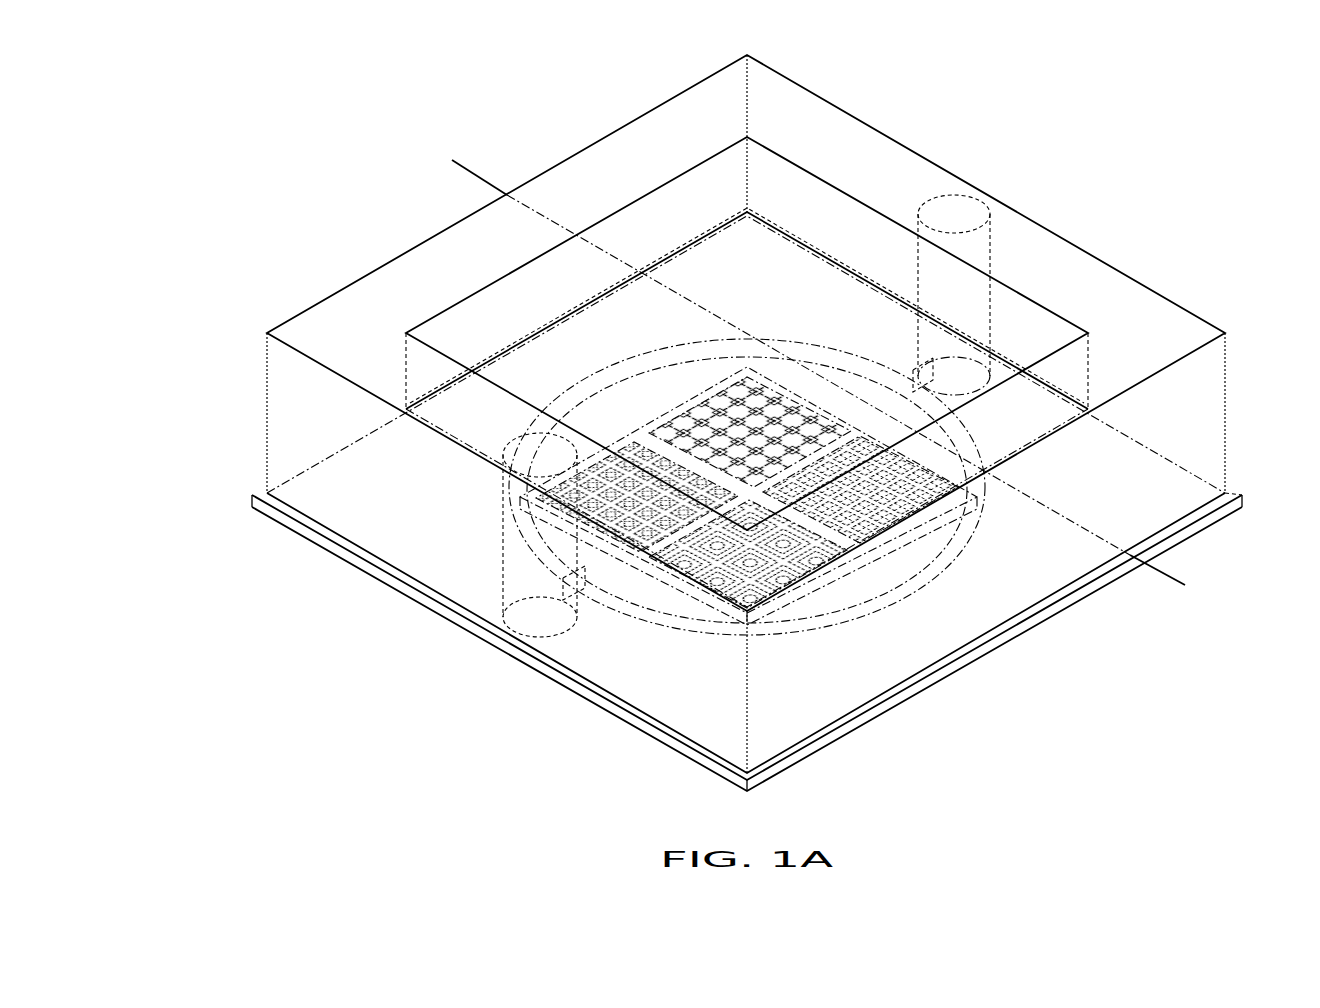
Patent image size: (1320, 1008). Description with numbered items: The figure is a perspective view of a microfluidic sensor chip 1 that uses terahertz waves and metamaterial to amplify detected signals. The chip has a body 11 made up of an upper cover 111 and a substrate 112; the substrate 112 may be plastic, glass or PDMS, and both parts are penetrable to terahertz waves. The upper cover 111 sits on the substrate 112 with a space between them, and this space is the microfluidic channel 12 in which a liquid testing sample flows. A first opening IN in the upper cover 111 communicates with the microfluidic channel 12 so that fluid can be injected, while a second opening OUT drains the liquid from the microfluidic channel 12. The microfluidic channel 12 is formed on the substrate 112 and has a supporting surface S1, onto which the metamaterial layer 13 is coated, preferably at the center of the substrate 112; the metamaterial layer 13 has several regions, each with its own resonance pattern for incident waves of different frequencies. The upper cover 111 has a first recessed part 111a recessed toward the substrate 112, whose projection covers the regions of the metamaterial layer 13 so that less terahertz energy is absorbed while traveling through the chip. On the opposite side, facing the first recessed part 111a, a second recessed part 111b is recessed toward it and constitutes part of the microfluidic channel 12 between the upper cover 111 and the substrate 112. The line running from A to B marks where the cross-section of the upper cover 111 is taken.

The microfluidic sensor chip 1 is at (187, 84).
The body 11 is at (155, 352).
The upper cover 111 is at (277, 355).
The substrate 112 is at (255, 495).
The first recessed part 111a is at (828, 222).
The second recessed part 111b is at (643, 624).
The microfluidic channel 12 is at (712, 268).
The metamaterial layer 13 is at (690, 396).
The first opening IN is at (968, 213).
The second opening OUT is at (542, 457).
The supporting surface S1 is at (1117, 496).
The line A-B end point A is at (461, 171).
The line A-B end point B is at (1170, 581).